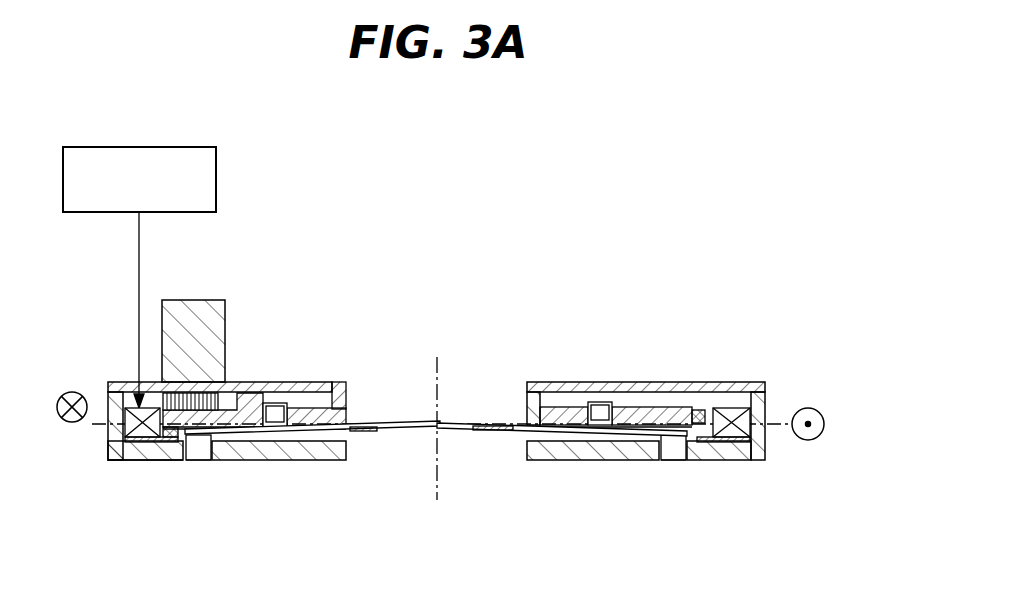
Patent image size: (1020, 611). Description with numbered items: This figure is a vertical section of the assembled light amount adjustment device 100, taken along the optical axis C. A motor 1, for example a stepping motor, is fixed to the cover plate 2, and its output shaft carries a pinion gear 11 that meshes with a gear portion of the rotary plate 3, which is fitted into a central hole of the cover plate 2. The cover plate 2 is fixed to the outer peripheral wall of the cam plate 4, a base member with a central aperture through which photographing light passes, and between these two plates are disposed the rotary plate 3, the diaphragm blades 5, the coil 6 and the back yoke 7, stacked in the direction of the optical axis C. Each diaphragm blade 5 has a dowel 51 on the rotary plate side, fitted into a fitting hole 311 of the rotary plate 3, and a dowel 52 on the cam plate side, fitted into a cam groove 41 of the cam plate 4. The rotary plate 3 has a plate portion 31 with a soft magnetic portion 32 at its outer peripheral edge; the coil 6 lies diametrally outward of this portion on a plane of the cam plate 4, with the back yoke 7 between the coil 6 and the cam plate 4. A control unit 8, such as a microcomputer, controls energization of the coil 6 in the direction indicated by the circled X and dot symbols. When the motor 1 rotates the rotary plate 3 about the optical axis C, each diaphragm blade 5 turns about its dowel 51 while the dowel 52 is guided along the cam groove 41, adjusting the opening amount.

The light amount adjustment device 100 is at (650, 163).
The optical axis C is at (442, 370).
The control unit 8 is at (185, 147).
The motor 1 is at (207, 303).
The cover plate 2 is at (720, 384).
The rotary plate 3 is at (350, 378).
The plate portion 31 is at (348, 394).
The fitting hole 311 is at (270, 402).
The dowel 51 is at (283, 403).
The pinion gear 11 is at (160, 397).
The coil 6 is at (127, 432).
The back yoke 7 is at (141, 442).
The soft magnetic portion 32 is at (165, 444).
The cam plate 4 is at (115, 448).
The dowel 52 is at (197, 456).
The cam groove 41 is at (202, 456).
The diaphragm blade 5 is at (373, 435).